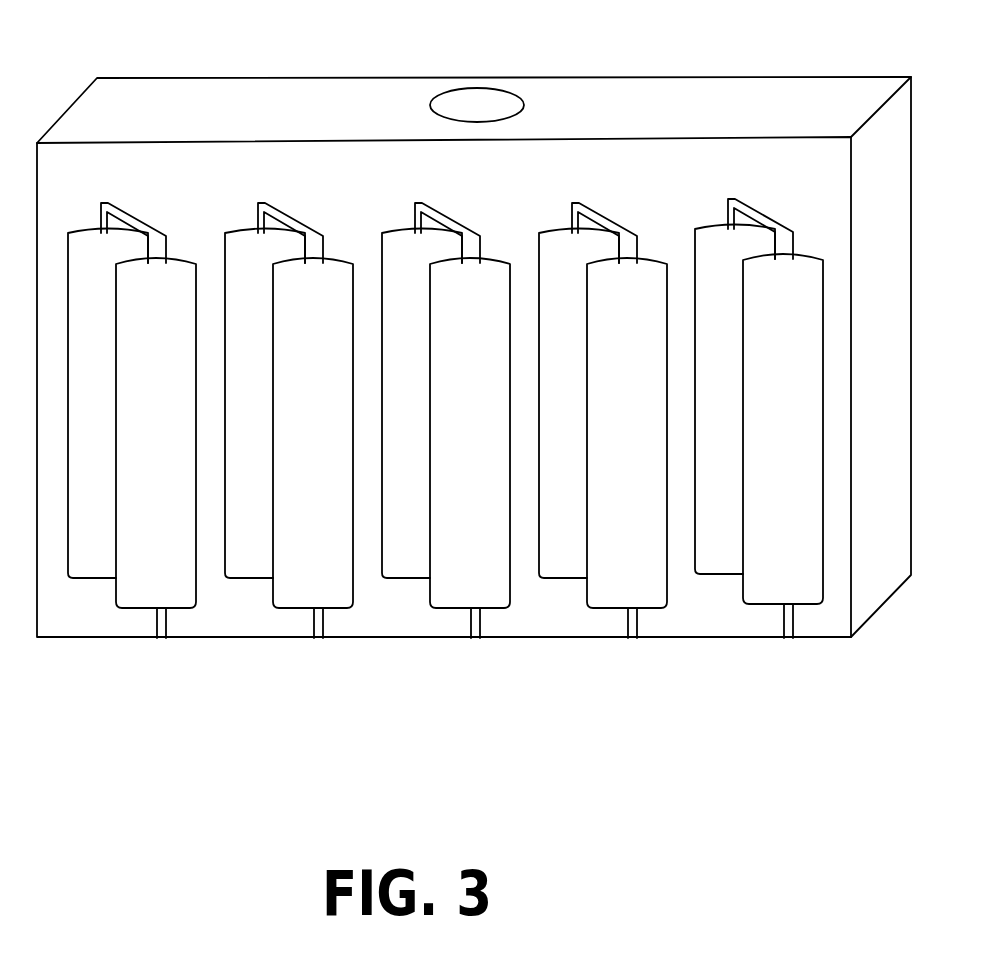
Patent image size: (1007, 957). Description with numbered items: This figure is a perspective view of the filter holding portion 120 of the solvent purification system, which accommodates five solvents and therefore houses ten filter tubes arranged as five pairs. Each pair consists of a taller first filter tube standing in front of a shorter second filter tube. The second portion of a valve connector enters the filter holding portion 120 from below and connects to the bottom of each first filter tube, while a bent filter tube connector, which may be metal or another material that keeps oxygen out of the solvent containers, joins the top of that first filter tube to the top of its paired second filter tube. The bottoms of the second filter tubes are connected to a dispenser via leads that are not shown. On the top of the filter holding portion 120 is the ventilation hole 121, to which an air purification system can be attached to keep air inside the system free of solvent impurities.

The filter holding portion 120 is at (728, 762).
The ventilation hole 121 is at (482, 78).